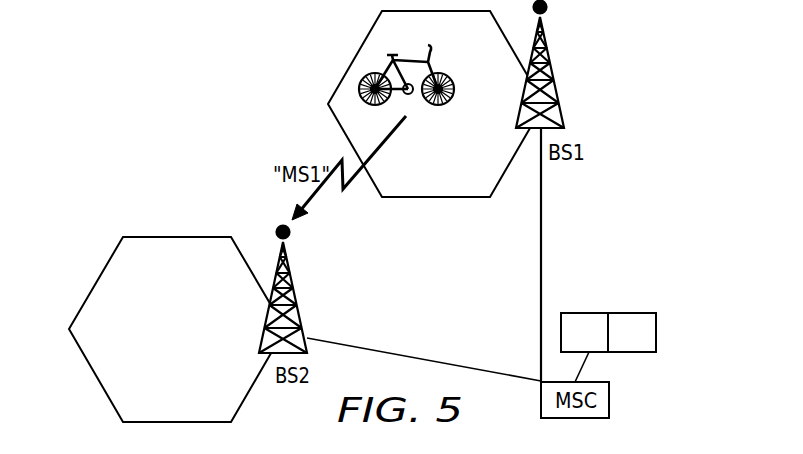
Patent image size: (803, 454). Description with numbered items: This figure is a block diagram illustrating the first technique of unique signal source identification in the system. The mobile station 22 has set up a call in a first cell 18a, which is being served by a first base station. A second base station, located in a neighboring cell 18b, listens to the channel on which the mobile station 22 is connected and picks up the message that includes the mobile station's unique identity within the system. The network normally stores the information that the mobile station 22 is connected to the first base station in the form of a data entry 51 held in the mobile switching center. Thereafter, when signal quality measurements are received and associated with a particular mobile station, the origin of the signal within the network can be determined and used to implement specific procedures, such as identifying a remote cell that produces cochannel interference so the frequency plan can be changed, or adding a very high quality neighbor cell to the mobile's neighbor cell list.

The first cell 18a is at (426, 180).
The cell 18b is at (174, 250).
The mobile station 22 is at (452, 72).
The data entry 51 is at (600, 313).